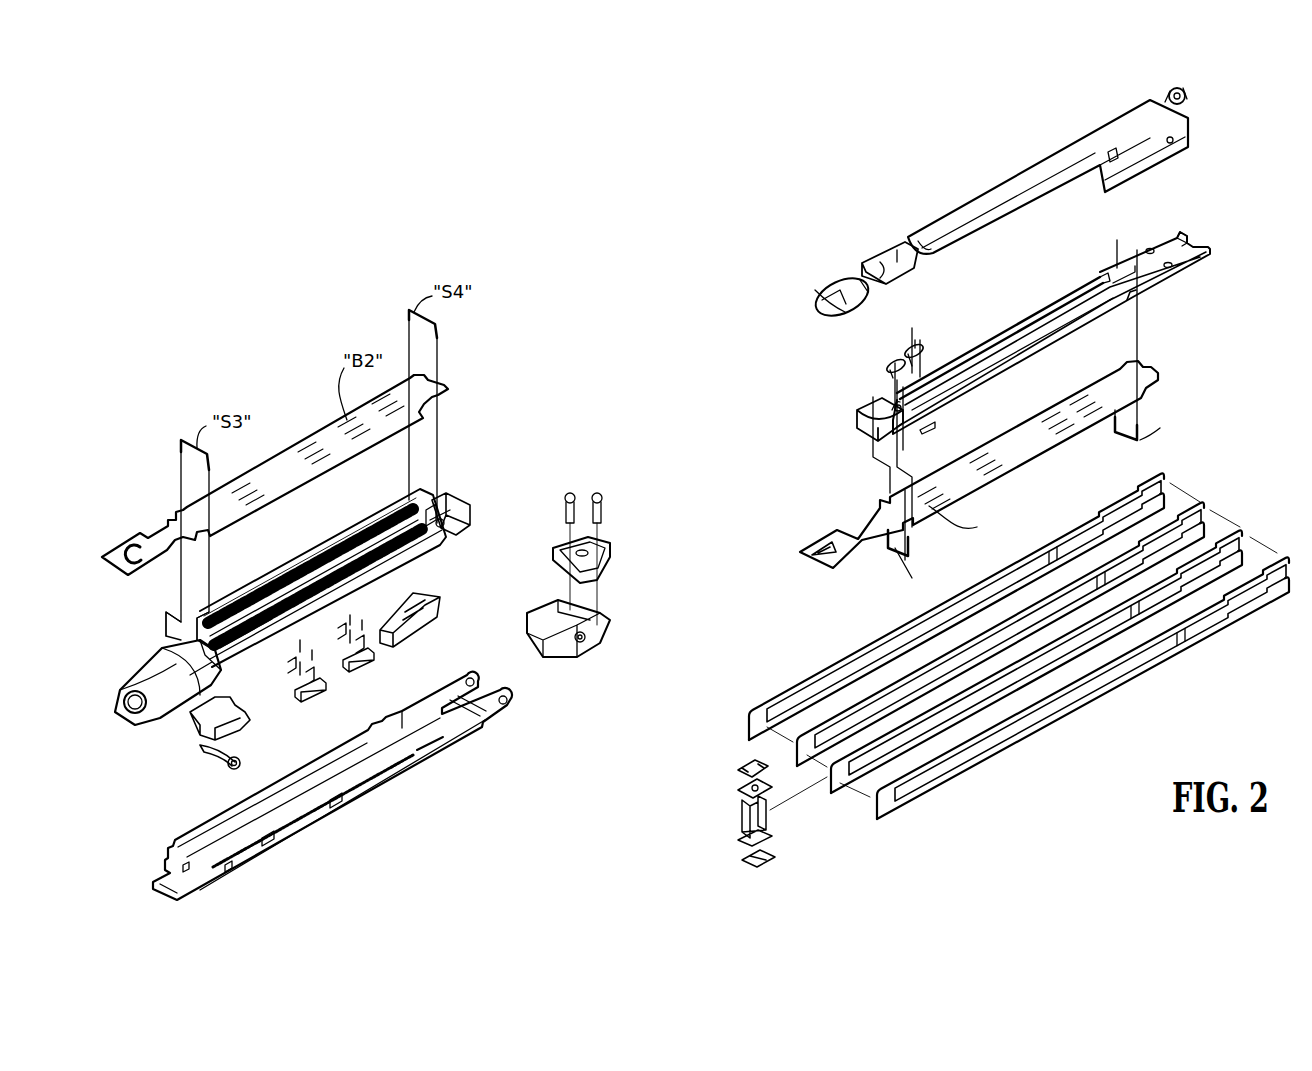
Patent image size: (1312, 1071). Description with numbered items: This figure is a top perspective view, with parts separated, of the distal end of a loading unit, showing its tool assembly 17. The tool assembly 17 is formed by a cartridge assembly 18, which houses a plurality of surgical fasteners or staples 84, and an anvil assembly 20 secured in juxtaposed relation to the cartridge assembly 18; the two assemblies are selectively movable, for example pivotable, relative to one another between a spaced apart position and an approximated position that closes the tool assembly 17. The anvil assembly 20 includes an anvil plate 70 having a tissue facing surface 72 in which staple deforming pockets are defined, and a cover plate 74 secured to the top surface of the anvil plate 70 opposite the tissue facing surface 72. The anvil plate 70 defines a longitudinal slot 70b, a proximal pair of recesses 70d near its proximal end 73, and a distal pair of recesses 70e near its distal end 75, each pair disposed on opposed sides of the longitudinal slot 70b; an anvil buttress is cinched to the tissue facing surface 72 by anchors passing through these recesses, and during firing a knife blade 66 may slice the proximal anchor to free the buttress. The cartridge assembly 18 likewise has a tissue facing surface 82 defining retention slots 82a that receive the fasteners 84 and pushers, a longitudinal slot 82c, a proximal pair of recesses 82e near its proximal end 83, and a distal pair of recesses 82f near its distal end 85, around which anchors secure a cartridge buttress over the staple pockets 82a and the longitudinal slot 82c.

The tool assembly 17 is at (968, 158).
The cartridge assembly 18 is at (497, 725).
The anvil assembly 20 is at (805, 263).
The knife blade 66 is at (704, 702).
The anvil plate 70 is at (1168, 286).
The longitudinal slot 70b is at (1070, 307).
The proximal pair of recesses 70d is at (1125, 255).
The distal pair of recesses 70e is at (876, 406).
The tissue facing surface 72 is at (1103, 327).
The proximal end 73 is at (1181, 236).
The cover plate 74 is at (1050, 152).
The distal end 75 is at (890, 396).
The tissue facing surface 82 is at (377, 523).
The retention slots 82a is at (206, 612).
The longitudinal slot 82c is at (262, 597).
The proximal pair of recesses 82e is at (446, 527).
The distal pair of recesses 82f is at (167, 640).
The proximal end 83 is at (449, 486).
The fasteners 84 is at (290, 682).
The distal end 85 is at (156, 661).